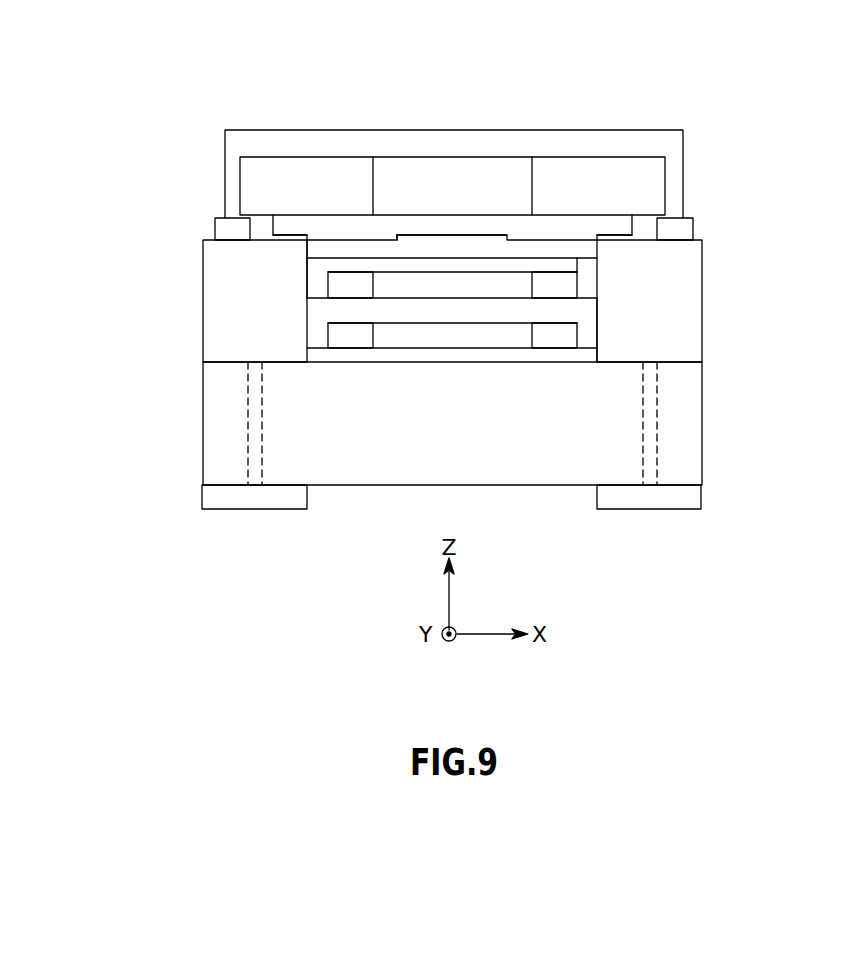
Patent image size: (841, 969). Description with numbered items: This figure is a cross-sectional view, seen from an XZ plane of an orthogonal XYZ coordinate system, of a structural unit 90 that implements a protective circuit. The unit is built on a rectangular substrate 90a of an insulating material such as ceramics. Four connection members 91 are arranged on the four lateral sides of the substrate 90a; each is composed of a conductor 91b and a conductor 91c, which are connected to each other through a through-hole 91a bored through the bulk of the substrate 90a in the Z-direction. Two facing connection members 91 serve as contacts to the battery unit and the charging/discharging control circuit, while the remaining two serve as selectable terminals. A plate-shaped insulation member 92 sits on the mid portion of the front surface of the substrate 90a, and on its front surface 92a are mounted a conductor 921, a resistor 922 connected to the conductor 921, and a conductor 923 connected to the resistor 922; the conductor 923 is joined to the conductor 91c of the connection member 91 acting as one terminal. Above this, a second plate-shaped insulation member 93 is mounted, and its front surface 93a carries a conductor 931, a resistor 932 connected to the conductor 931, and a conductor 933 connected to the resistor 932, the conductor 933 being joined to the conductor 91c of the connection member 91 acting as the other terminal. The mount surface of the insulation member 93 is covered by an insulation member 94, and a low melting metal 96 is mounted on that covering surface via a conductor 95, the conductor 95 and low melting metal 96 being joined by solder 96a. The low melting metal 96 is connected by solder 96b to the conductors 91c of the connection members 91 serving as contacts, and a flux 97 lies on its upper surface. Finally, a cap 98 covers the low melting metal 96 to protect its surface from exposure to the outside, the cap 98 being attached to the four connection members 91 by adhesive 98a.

The structural unit 90 is at (768, 88).
The substrate 90a is at (203, 457).
The connection member 91 is at (122, 283).
The through-hole 91a is at (248, 402).
The conductor 91b is at (208, 495).
The conductor 91c is at (222, 299).
The plate-shaped insulation member 92 is at (420, 362).
The front surface 92a is at (582, 348).
The conductor 921 is at (548, 340).
The resistor 922 is at (475, 337).
The conductor 923 is at (337, 343).
The plate-shaped insulation member 93 is at (573, 312).
The front surface 93a is at (307, 297).
The conductor 931 is at (547, 283).
The resistor 932 is at (410, 290).
The conductor 933 is at (343, 283).
The insulation member 94 is at (578, 267).
The conductor 95 is at (443, 253).
The low melting metal 96 is at (612, 227).
The solder 96a is at (475, 233).
The solder 96b is at (270, 235).
The flux 97 is at (513, 177).
The cap 98 is at (470, 143).
The adhesive 98a is at (223, 228).